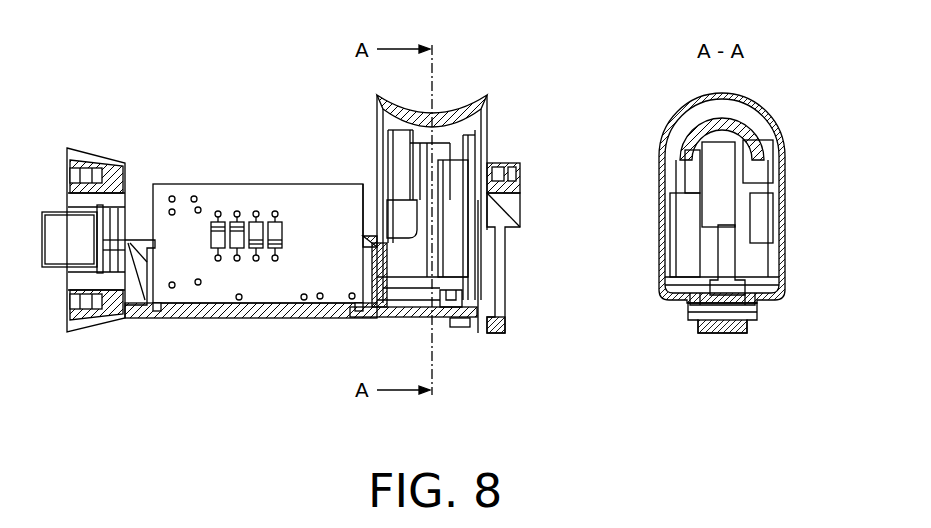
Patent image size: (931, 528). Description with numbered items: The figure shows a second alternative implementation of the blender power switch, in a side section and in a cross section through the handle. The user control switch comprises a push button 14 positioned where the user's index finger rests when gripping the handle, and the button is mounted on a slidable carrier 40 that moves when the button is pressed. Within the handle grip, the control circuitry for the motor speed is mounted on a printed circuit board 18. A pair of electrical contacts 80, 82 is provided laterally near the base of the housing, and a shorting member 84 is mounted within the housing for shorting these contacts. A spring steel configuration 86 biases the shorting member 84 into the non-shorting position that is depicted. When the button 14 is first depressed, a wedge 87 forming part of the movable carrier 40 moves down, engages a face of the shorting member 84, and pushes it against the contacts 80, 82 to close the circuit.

The push button 14 is at (470, 100).
The printed circuit board 18 is at (192, 183).
The slidable carrier 40 is at (488, 118).
The electrical contact 80 is at (762, 303).
The electrical contact 82 is at (478, 305).
The shorting member 84 is at (480, 255).
The spring steel configuration 86 is at (500, 205).
The wedge 87 is at (488, 150).